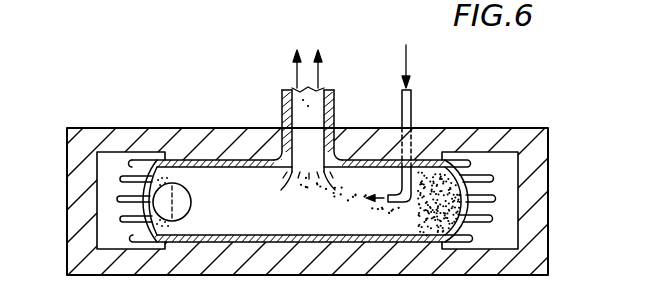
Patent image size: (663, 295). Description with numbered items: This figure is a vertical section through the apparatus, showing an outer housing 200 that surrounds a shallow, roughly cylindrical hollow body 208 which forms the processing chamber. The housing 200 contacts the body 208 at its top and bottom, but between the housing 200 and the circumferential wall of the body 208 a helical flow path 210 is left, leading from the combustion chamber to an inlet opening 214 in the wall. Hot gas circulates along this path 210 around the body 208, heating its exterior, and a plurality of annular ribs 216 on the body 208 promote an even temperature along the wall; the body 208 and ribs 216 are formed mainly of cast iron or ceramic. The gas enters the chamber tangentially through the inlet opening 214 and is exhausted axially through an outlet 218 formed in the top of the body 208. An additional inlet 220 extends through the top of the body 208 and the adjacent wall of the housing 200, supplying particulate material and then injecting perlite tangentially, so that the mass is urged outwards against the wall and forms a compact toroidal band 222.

The outer housing 200 is at (82, 238).
The hollow body 208 is at (140, 203).
The helical flow path 210 is at (103, 177).
The inlet opening 214 is at (191, 206).
The annular ribs 216 is at (132, 176).
The outlet 218 is at (282, 103).
The additional inlet 220 is at (413, 103).
The compact toroidal band 222 is at (450, 212).